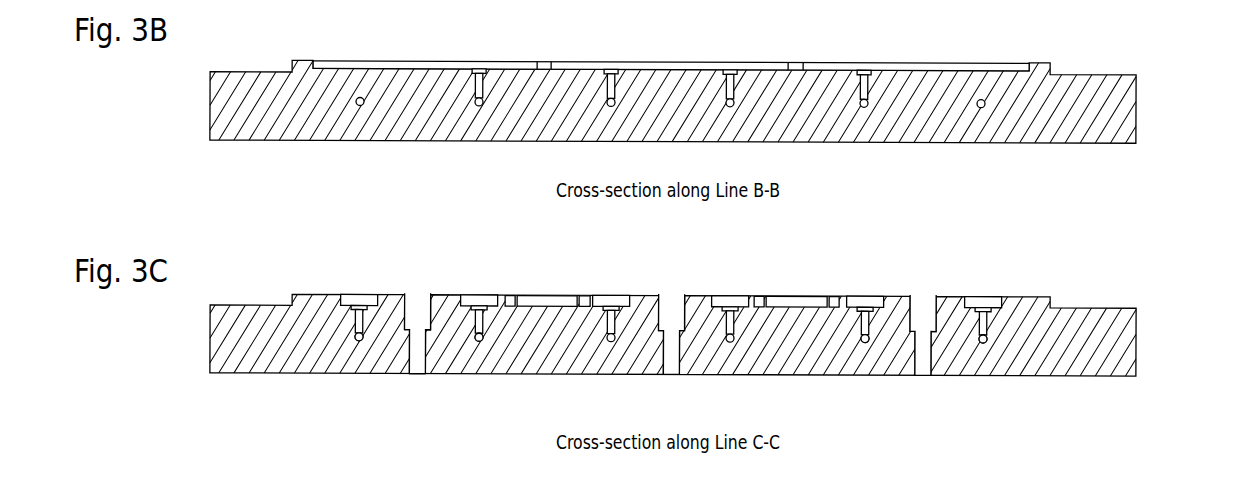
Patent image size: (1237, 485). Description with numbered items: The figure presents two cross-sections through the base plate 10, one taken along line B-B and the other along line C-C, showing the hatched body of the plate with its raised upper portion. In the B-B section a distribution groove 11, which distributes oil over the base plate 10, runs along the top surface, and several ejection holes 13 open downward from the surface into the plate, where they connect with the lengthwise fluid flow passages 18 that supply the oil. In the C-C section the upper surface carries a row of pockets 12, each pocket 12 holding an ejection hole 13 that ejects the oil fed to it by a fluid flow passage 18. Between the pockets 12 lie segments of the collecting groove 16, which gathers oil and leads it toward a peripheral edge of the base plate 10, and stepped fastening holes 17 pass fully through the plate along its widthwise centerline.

In FIG. 3B, the base plate 10 is at (1118, 71).
In FIG. 3C, the base plate 10 is at (1125, 305).
In FIG. 3B, the distribution groove 11 is at (347, 61).
In FIG. 3C, the pocket 12 is at (470, 295).
In FIG. 3B, the ejection hole 13 is at (481, 69).
In FIG. 3C, the ejection hole 13 is at (484, 306).
In FIG. 3C, the collecting groove 16 is at (549, 297).
In FIG. 3C, the fastening hole 17 is at (418, 294).
In FIG. 3B, the fluid flow passage 18 is at (477, 106).
In FIG. 3C, the fluid flow passage 18 is at (477, 341).